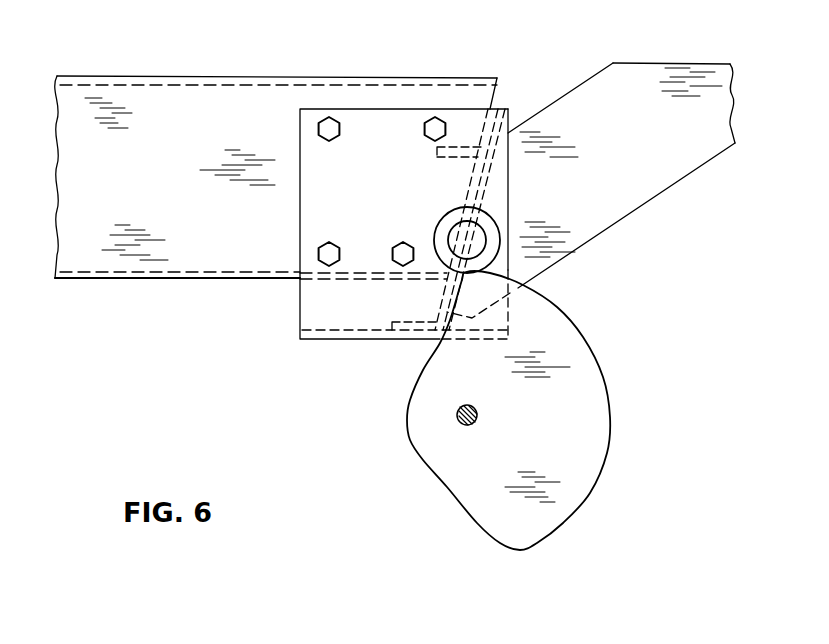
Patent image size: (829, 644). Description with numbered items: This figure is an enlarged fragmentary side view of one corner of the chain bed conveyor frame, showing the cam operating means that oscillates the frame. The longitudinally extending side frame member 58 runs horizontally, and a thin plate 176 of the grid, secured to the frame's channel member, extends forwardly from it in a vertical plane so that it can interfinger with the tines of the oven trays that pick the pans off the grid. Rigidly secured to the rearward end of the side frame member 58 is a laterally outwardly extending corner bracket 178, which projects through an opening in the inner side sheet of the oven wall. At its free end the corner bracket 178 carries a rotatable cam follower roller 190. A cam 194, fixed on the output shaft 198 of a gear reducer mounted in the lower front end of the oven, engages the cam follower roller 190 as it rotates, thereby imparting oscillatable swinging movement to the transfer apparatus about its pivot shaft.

The side frame member 58 is at (190, 282).
The thin plate 176 is at (640, 210).
The corner bracket 178 is at (404, 224).
The cam follower roller 190 is at (458, 208).
The cam 194 is at (597, 355).
The output shaft 198 is at (455, 416).